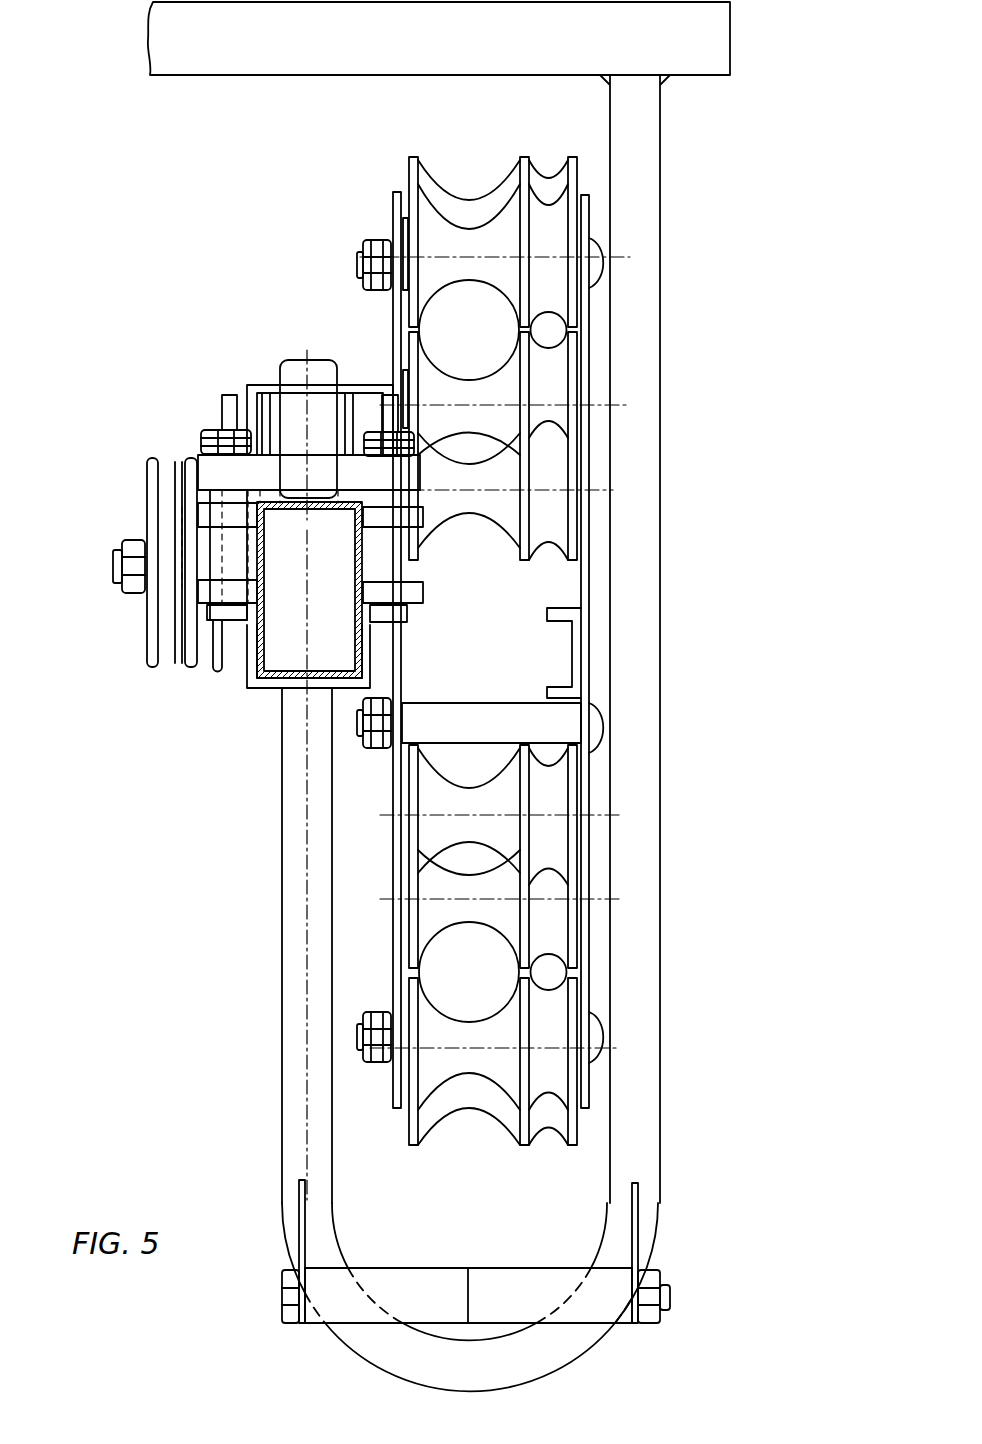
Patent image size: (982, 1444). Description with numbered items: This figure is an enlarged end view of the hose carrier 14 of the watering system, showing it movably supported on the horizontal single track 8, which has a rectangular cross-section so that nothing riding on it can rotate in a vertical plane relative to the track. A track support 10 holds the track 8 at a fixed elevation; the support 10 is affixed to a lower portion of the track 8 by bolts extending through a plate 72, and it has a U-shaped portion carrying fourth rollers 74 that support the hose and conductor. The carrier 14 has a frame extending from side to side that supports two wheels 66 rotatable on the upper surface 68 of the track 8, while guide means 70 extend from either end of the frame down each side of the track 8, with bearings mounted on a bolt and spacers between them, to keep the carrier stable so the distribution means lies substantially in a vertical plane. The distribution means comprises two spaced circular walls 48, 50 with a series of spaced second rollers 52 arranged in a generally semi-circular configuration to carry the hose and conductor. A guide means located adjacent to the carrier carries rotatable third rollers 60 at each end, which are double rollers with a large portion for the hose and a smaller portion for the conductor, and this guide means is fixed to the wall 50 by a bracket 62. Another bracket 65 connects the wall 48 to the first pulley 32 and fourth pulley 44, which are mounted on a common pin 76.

The track 8 is at (262, 680).
The track support 10 is at (640, 322).
The hose carrier 14 is at (393, 205).
The first pulley 32 is at (147, 643).
The fourth pulley 44 is at (210, 643).
The circular wall 48 is at (393, 793).
The circular wall 50 is at (585, 757).
The second rollers 52 is at (557, 247).
The third rollers 60 is at (563, 182).
The bracket 62 is at (577, 620).
The bracket 65 is at (368, 390).
The wheels 66 is at (307, 360).
The upper surface 68 is at (275, 500).
The guide means 70 is at (413, 597).
The plate 72 is at (310, 683).
The fourth rollers 74 is at (500, 1280).
The common pin 76 is at (113, 562).